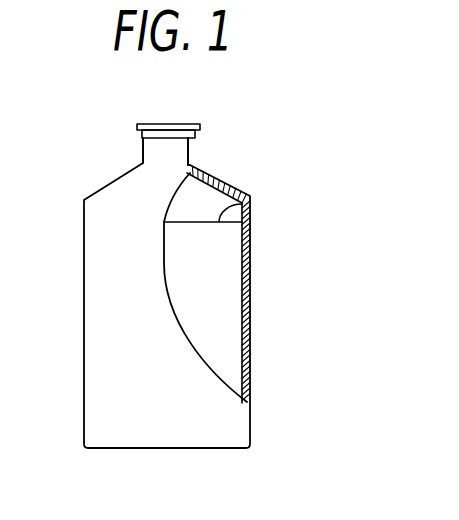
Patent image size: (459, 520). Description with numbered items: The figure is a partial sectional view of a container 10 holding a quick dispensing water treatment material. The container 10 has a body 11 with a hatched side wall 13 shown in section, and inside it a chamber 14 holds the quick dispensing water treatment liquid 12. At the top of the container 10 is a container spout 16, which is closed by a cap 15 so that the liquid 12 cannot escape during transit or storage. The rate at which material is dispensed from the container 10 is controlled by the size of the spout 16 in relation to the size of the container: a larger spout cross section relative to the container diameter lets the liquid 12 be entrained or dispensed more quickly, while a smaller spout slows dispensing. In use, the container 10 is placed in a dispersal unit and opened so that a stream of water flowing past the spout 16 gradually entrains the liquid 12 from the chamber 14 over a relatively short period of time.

The container 10 is at (217, 261).
The outer container body 11 is at (227, 420).
The quick dispensing water treatment liquid 12 is at (203, 283).
The hatched side wall 13 is at (249, 201).
The chamber 14 is at (192, 200).
The cap 15 is at (190, 123).
The container spout 16 is at (186, 150).